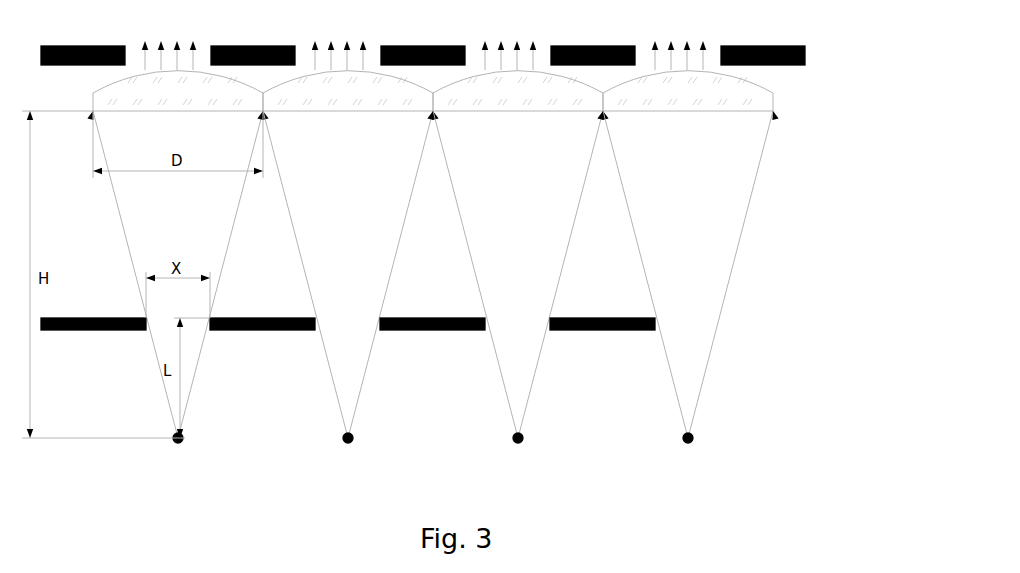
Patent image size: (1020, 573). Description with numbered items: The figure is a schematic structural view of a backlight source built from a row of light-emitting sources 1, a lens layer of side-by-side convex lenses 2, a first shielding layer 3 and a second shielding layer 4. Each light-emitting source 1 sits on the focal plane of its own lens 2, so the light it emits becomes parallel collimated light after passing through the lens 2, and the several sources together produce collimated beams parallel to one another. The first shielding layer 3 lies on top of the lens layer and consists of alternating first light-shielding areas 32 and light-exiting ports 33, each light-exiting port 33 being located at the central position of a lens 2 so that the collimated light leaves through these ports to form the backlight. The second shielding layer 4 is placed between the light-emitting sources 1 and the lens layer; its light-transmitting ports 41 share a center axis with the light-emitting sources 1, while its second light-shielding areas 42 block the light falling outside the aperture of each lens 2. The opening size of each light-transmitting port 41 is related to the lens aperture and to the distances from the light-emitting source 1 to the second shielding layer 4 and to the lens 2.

The light-emitting source 1 is at (182, 445).
The lens 2 is at (125, 103).
The first shielding layer 3 is at (453, 41).
The first light-shielding area 32 is at (85, 46).
The light-exiting port 33 is at (172, 55).
The second shielding layer 4 is at (394, 322).
The light-transmitting port 41 is at (336, 323).
The second light-shielding area 42 is at (240, 331).